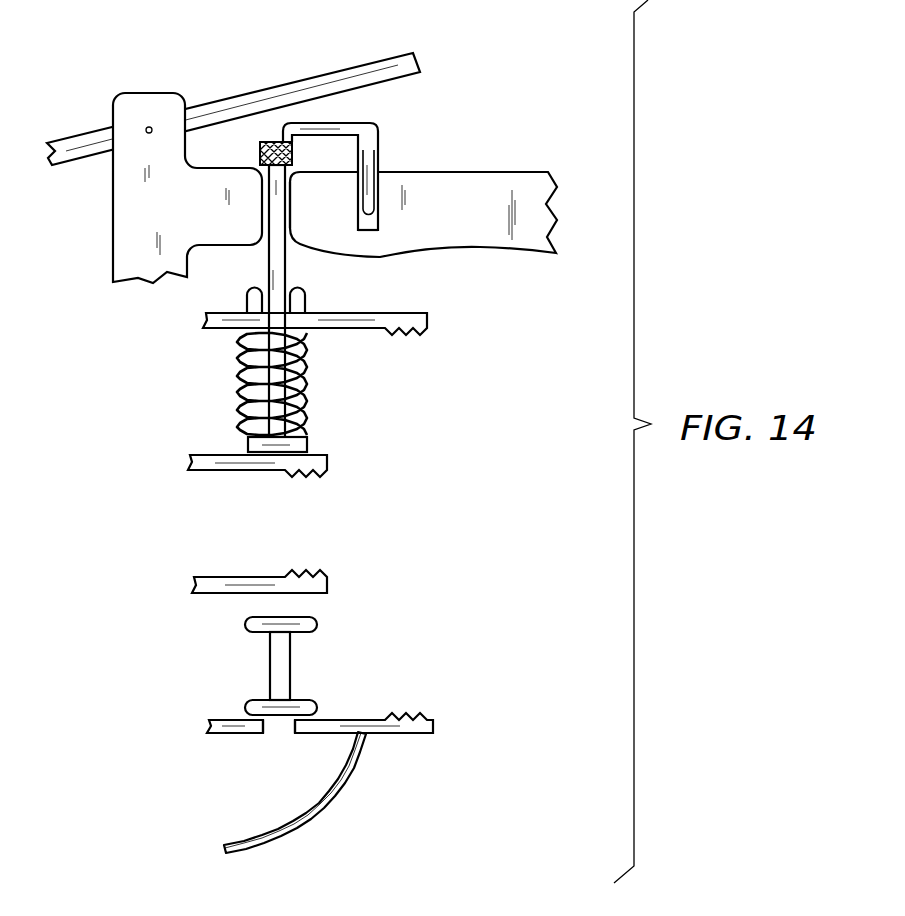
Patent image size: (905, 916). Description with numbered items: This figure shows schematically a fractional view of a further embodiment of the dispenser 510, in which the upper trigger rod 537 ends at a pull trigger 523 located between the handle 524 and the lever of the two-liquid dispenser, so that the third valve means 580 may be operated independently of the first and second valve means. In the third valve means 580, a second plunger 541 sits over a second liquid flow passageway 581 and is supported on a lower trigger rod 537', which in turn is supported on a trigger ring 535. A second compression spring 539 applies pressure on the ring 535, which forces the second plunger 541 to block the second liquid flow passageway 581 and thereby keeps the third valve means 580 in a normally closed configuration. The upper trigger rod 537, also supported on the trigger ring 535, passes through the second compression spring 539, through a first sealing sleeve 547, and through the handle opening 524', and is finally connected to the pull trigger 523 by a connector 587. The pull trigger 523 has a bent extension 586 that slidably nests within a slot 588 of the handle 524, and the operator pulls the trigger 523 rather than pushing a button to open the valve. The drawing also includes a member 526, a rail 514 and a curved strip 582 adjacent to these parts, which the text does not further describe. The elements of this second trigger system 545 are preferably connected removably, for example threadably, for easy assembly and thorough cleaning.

The dispenser 510 is at (500, 48).
The leg member 526 is at (382, 65).
The connector 587 is at (270, 140).
The pull trigger 523 is at (338, 126).
The bent extension 586 is at (368, 145).
The slot 588 is at (376, 224).
The handle 524 is at (442, 185).
The handle opening 524' is at (324, 200).
The upper trigger rod 537 is at (199, 265).
The first sealing sleeve 547 is at (298, 307).
The second compression spring 539 is at (308, 385).
The trigger ring 535 is at (300, 445).
The second trigger system 545 is at (192, 297).
The lower trigger rod 537' is at (324, 666).
The second plunger 541 is at (317, 710).
The third valve means 580 is at (225, 698).
The second liquid flow passageway 581 is at (280, 722).
The frame rail 514 is at (380, 737).
The leaf spring 582 is at (333, 807).